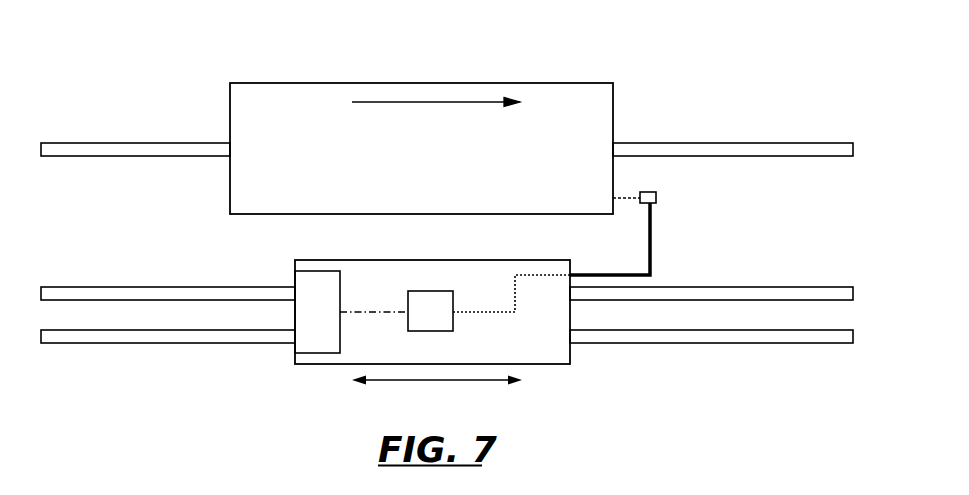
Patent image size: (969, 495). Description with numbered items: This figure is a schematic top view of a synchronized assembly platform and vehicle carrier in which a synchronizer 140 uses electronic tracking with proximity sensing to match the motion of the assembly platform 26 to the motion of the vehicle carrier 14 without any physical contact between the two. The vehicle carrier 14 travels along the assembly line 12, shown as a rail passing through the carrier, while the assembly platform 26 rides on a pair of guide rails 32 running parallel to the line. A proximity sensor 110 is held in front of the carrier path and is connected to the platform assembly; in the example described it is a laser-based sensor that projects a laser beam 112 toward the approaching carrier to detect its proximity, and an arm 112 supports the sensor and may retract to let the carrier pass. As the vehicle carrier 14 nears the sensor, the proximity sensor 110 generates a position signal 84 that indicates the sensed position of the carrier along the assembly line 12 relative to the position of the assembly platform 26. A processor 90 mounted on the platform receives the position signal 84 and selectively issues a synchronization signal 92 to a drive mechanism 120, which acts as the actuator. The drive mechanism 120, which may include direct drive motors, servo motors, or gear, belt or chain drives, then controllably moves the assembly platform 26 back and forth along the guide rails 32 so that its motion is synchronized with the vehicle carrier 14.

The assembly line 12 is at (686, 142).
The vehicle carrier 14 is at (230, 101).
The assembly platform 26 is at (295, 265).
The guide rails 32 is at (168, 286).
The position signal 84 is at (478, 313).
The processor 90 is at (442, 324).
The synchronization signal 92 is at (358, 313).
The proximity sensor 110 is at (657, 198).
The projected laser beam 112 is at (632, 186).
The drive mechanism 120 is at (334, 324).
The synchronizer 140 is at (744, 239).